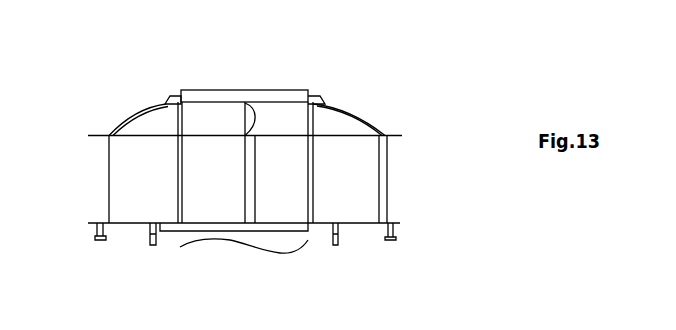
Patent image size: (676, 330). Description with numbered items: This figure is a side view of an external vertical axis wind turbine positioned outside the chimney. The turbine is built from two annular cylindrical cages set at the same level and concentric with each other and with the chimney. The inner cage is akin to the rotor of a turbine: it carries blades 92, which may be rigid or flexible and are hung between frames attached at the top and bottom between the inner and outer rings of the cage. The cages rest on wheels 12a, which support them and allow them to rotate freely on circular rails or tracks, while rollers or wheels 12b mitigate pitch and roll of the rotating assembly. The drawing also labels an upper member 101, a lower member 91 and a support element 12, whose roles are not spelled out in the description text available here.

The cap 101 is at (280, 90).
The blades 92 is at (358, 110).
The bottom plate 91 is at (363, 223).
The fixing member 12 is at (396, 235).
The wheels 12a is at (100, 240).
The rollers/wheels 12b is at (103, 233).